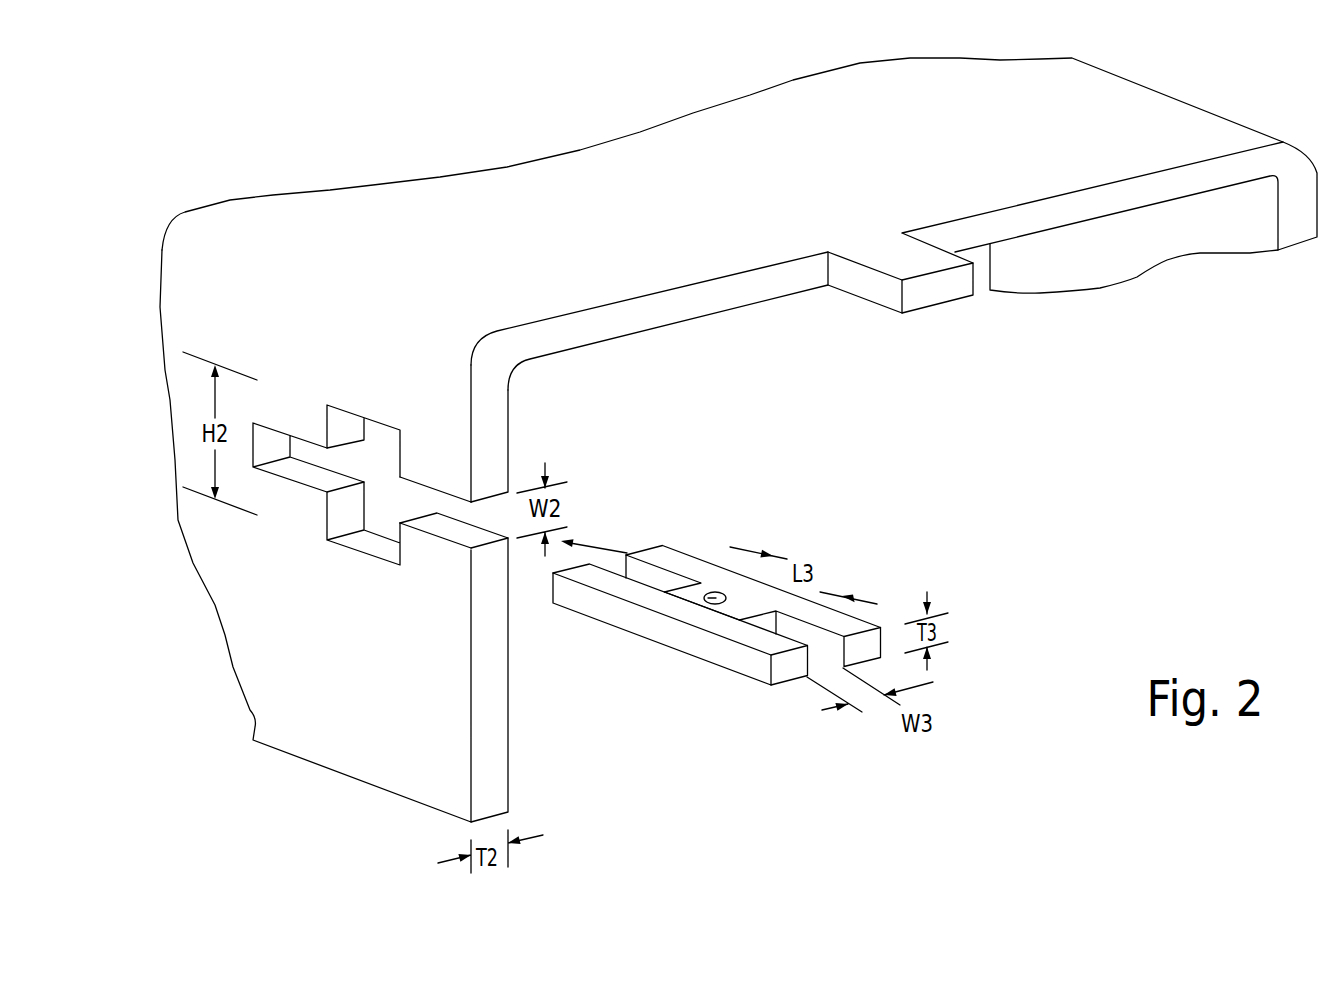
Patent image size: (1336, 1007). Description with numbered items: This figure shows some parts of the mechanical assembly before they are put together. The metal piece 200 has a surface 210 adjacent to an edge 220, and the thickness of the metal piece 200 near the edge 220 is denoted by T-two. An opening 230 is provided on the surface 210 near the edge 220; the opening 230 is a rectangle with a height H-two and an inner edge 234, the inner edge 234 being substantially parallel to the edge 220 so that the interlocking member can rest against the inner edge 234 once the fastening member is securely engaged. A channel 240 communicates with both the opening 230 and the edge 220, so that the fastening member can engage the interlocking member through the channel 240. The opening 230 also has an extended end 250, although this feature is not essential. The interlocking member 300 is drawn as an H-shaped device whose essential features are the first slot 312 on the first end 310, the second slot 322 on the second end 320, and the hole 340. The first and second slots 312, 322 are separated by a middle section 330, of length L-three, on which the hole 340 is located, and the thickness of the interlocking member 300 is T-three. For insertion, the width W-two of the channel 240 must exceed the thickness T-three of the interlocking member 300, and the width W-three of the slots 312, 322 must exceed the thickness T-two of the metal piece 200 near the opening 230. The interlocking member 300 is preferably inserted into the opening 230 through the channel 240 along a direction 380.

The metal piece 200 is at (468, 152).
The surface 210 is at (343, 653).
The edge 220 is at (490, 458).
The opening 230 is at (380, 440).
The inner edge 234 is at (400, 548).
The channel 240 is at (455, 503).
The extended end 250 is at (307, 447).
The interlocking member 300 is at (739, 631).
The first end 310 is at (675, 547).
The first slot 312 is at (633, 560).
The second end 320 is at (872, 623).
The second slot 322 is at (778, 628).
The middle section 330 is at (695, 590).
The hole 340 is at (700, 605).
The direction 380 is at (597, 548).